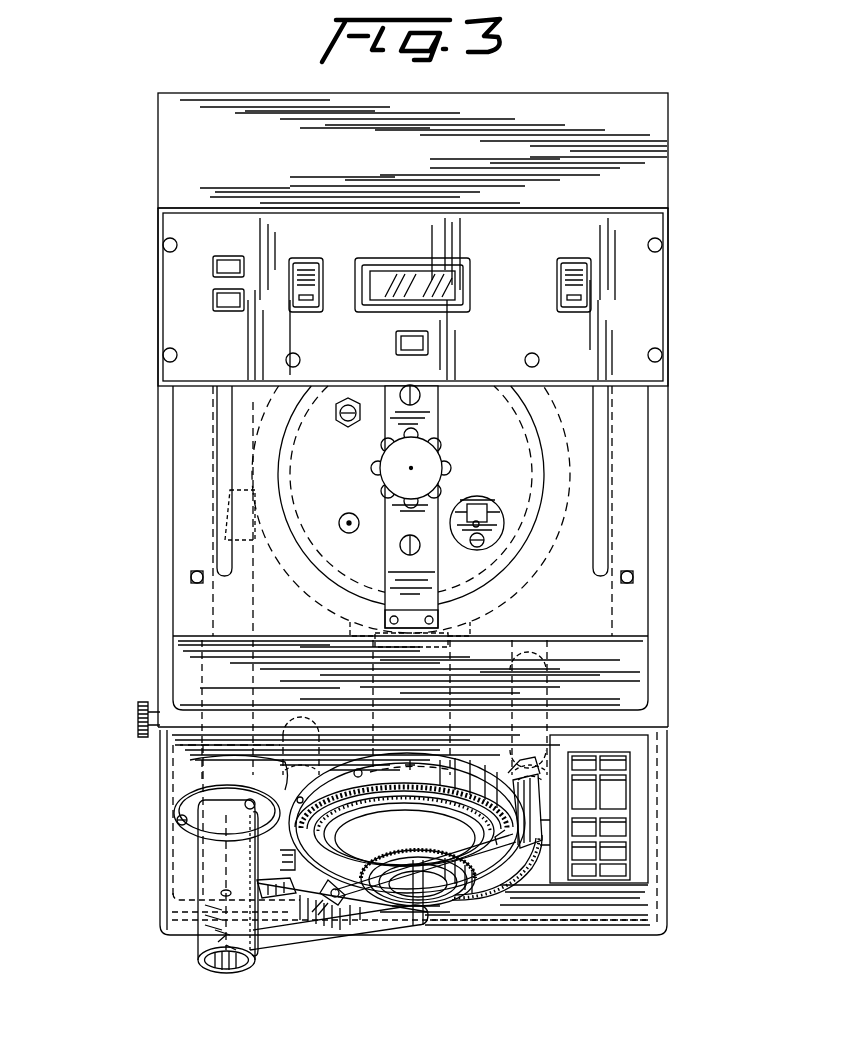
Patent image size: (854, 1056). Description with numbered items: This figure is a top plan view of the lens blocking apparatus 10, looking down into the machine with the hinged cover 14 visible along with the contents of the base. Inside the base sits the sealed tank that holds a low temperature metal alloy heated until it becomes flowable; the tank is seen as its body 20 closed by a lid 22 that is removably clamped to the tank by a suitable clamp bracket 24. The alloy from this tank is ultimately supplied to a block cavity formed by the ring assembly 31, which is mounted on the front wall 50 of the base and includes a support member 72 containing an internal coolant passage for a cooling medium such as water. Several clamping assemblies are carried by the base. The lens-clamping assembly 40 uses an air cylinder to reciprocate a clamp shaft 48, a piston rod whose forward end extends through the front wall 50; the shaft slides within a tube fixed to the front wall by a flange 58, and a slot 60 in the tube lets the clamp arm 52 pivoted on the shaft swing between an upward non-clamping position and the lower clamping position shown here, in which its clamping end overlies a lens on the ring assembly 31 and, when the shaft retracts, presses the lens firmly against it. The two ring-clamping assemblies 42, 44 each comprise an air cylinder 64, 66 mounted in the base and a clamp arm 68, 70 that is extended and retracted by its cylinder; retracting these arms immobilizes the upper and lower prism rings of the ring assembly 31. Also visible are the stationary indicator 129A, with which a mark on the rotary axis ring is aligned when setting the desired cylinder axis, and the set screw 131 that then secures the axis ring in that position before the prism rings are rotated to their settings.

The lens blocking apparatus 10 is at (160, 515).
The cover 14 is at (652, 290).
The body 20 is at (530, 536).
The lid 22 is at (520, 482).
The clamp bar 24 is at (435, 415).
The ring assembly 31 is at (460, 938).
The lens-clamping assembly 40 is at (315, 943).
The ring-clamping assembly 42 is at (483, 882).
The ring-clamping assembly 44 is at (350, 907).
The clamp shaft 48 is at (165, 866).
The front wall 50 is at (182, 766).
The clamp arm 52 is at (402, 930).
The flange 58 is at (177, 804).
The slot 60 is at (245, 963).
The air cylinder 64 is at (548, 662).
The air cylinder 66 is at (285, 762).
The clamp arm 68 is at (517, 882).
The clamp arm 70 is at (332, 900).
The support member 72 is at (545, 765).
The stationary indicator 129A is at (285, 883).
The set screw 131 is at (445, 923).